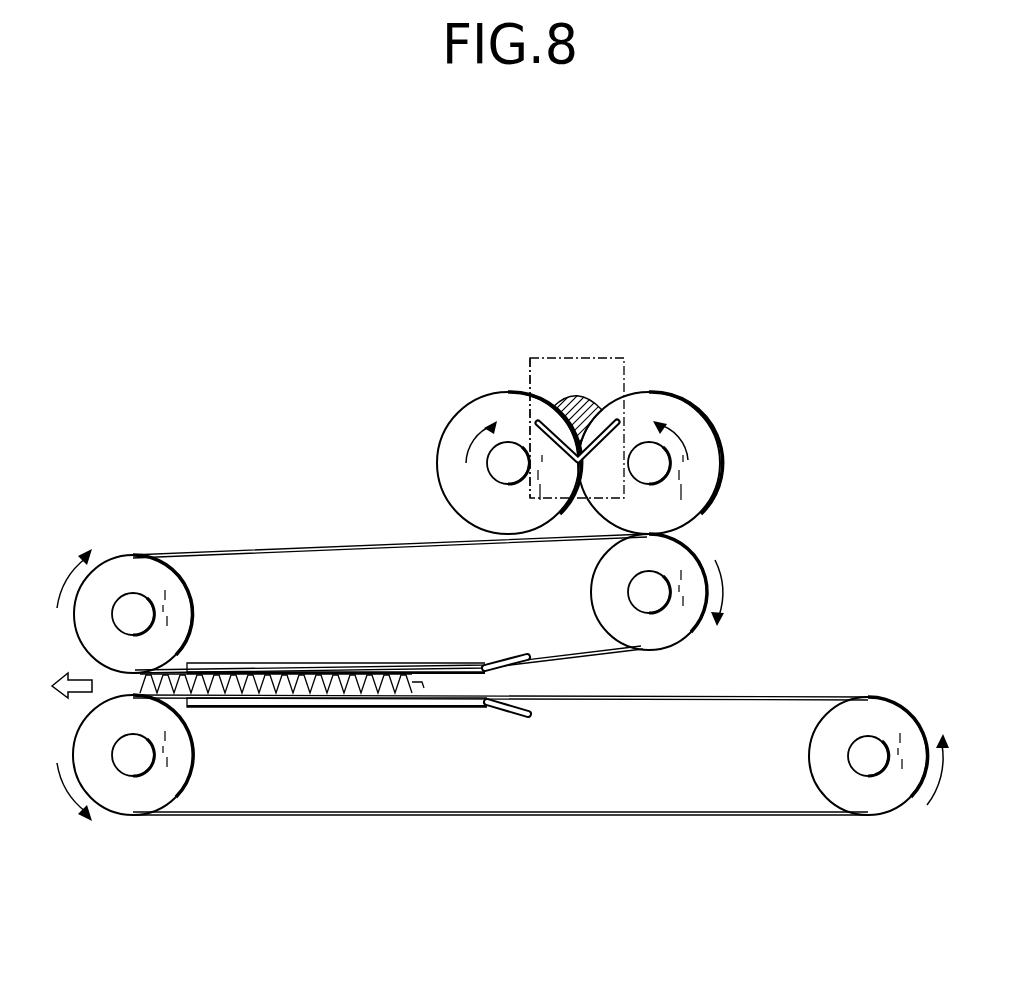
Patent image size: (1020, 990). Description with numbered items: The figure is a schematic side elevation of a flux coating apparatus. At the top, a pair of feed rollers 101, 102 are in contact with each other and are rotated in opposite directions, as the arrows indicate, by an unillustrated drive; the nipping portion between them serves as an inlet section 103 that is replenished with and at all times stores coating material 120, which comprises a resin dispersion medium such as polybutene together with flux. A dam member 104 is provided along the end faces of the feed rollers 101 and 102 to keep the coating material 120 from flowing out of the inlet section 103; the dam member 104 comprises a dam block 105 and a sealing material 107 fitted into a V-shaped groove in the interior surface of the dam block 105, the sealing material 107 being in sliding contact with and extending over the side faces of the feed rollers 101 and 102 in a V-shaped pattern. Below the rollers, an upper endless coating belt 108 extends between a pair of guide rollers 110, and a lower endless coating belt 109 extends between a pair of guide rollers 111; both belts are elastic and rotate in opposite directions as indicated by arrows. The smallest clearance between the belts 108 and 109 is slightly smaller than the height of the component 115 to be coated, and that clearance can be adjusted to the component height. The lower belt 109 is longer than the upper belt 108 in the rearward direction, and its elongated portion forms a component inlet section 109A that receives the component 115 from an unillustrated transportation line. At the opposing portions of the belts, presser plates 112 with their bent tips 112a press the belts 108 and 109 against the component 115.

The feed roller 101 is at (722, 445).
The feed roller 102 is at (440, 438).
The inlet section 103 is at (541, 382).
The dam member 104 is at (634, 364).
The dam block 105 is at (530, 387).
The sealing material 107 is at (618, 423).
The upper endless coating belt 108 is at (336, 548).
The lower endless coating belt 109 is at (420, 816).
The component inlet section 109A is at (783, 695).
The guide roller 110 is at (192, 615).
The guide roller 111 is at (192, 757).
The presser plate 112 is at (346, 663).
The guide plate bent tips 112a is at (493, 658).
The component 115 is at (424, 690).
The coating material 120 is at (588, 393).